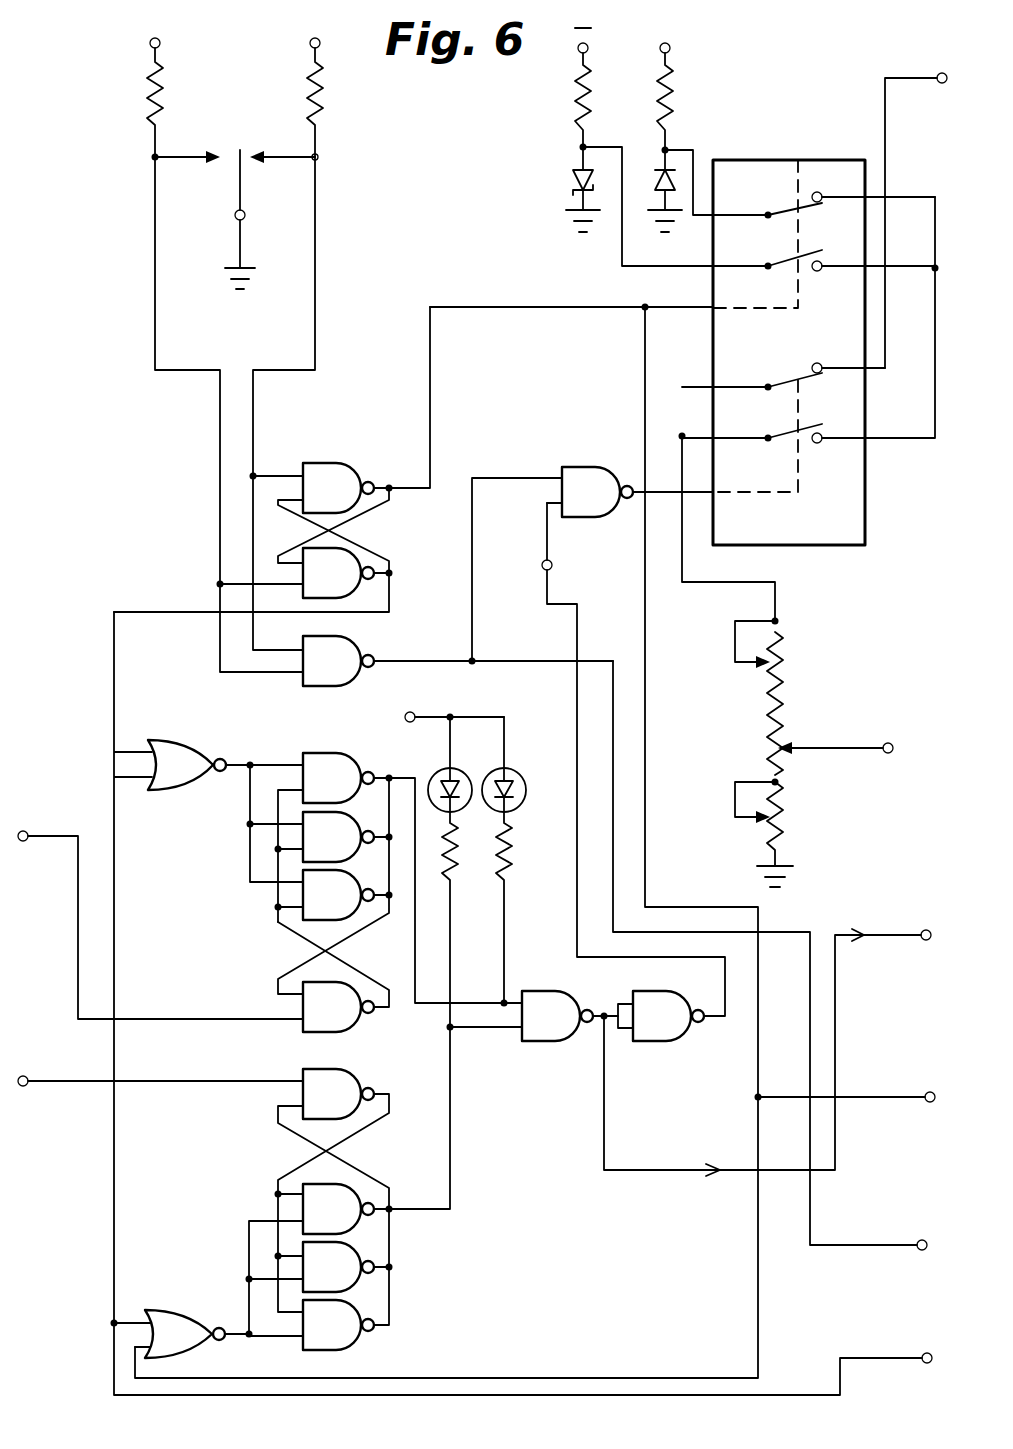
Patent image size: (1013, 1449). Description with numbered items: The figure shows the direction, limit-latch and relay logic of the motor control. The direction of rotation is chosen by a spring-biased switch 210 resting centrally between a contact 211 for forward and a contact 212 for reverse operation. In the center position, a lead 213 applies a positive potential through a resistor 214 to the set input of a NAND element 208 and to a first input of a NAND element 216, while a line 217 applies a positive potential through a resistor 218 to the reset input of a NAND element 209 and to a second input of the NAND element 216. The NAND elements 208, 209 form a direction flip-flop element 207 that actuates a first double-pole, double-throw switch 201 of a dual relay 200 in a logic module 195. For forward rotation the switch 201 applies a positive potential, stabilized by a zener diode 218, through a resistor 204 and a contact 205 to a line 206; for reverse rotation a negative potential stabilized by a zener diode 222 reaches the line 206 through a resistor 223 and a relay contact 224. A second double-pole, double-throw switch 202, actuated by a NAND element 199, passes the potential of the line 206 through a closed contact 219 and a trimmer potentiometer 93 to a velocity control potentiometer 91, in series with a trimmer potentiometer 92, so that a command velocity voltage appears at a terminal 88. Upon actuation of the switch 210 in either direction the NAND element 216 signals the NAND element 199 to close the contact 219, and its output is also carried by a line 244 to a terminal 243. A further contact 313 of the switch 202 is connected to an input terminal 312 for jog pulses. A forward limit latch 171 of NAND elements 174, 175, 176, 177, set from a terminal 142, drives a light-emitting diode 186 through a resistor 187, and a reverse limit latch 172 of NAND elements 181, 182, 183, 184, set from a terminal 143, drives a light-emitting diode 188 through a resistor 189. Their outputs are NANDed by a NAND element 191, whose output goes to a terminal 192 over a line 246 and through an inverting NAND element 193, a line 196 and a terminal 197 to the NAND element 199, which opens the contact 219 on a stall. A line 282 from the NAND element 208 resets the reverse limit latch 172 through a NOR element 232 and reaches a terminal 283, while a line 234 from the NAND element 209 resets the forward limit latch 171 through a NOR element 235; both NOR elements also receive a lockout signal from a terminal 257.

The resistor / zener diode 218 is at (148, 110).
The resistor 214 is at (322, 96).
The switch 210 is at (252, 118).
The contact 212 is at (212, 166).
The contact 211 is at (262, 168).
The line 217 is at (154, 306).
The lead 213 is at (318, 296).
The resistor 223 is at (578, 108).
The zener diode 222 is at (570, 183).
The resistor 204 is at (676, 110).
The dual relay 200 is at (845, 355).
The first double-pole, double-throw switch 201 is at (785, 290).
The second double-pole, double-throw switch 202 is at (783, 416).
The contact 205 is at (788, 208).
The relay contact 224 is at (775, 258).
The input terminal 312 is at (937, 72).
The contact 313 is at (776, 386).
The contact 219 is at (774, 446).
The line 206 is at (934, 410).
The logic module 195 is at (708, 355).
The line 282 is at (645, 356).
The NAND element 208 is at (356, 500).
The NAND element 209 is at (356, 585).
The flip-flop element 207 is at (378, 527).
The NAND element 216 is at (356, 673).
The line 244 is at (540, 668).
The NAND element 199 is at (612, 503).
The terminal 197 is at (553, 566).
The line 234 is at (176, 606).
The NOR element 235 is at (200, 777).
The NAND element 177 is at (356, 790).
The NAND element 176 is at (356, 849).
The NAND element 175 is at (356, 907).
The NAND element 174 is at (356, 1019).
The forward limit latch 171 is at (224, 871).
The terminal 142 is at (58, 832).
The terminal 143 is at (24, 1076).
The NAND element 181 is at (356, 1106).
The NAND element 182 is at (356, 1221).
The NAND element 183 is at (356, 1279).
The NAND element 184 is at (356, 1337).
The NOR element 232 is at (197, 1346).
The reverse limit latch 172 is at (229, 1201).
The light-emitting diode 188 is at (434, 762).
The light-emitting diode 186 is at (490, 768).
The resistor 189 is at (460, 886).
The resistor 187 is at (510, 884).
The NAND element 191 is at (572, 1027).
The NAND element 193 is at (684, 1027).
The terminal 192 is at (602, 1024).
The line 196 is at (660, 960).
The line 246 is at (690, 1168).
The terminal 283 is at (930, 1091).
The terminal 243 is at (924, 1240).
The terminal 257 is at (924, 1352).
The trimmer potentiometer 93 is at (784, 660).
The velocity control potentiometer 91 is at (768, 728).
The terminal 88 is at (893, 755).
The trimmer potentiometer 92 is at (786, 822).